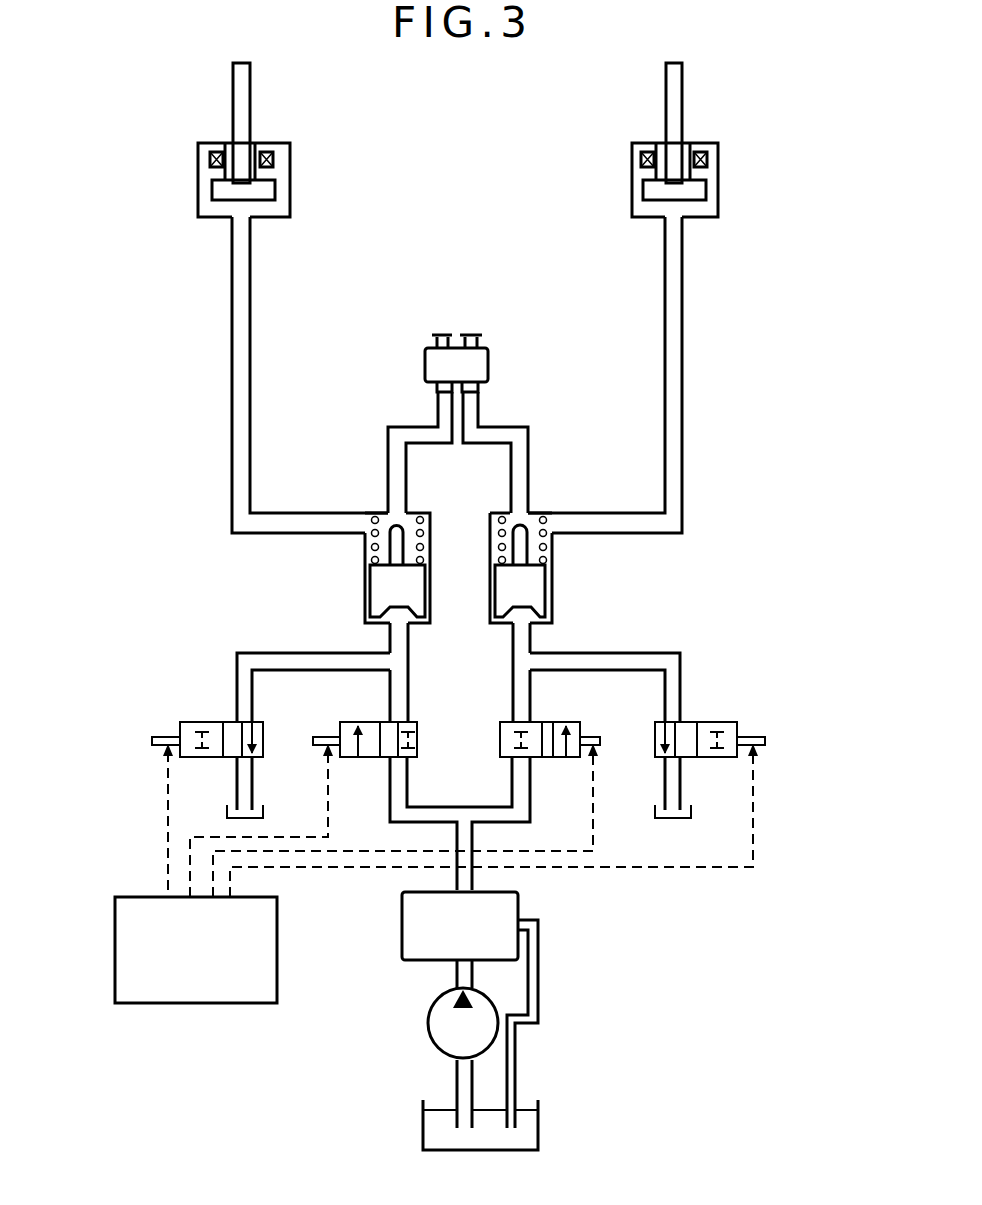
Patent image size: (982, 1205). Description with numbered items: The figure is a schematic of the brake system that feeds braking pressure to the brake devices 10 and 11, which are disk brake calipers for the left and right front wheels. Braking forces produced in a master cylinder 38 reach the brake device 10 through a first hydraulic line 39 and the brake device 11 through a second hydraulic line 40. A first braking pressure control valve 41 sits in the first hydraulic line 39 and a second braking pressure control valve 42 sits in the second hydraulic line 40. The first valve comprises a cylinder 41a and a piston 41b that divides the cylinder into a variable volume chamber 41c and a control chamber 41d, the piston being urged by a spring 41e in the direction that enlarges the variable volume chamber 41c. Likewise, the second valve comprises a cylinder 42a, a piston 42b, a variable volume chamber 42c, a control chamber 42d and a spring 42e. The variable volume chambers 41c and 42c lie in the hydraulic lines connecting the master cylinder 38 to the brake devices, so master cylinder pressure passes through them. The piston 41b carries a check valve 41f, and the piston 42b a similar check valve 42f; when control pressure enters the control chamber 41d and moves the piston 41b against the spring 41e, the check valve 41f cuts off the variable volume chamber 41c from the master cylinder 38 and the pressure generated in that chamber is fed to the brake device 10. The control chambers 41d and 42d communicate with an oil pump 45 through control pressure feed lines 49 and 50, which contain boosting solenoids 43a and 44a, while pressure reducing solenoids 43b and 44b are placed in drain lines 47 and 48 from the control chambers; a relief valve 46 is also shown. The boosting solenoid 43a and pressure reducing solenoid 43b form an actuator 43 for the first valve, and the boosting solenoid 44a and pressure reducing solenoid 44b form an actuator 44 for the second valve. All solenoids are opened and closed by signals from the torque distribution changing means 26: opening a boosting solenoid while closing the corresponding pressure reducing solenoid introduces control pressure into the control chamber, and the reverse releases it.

The brake device 10 is at (283, 220).
The brake device 11 is at (645, 222).
The torque distribution changing means 26 is at (198, 1005).
The master cylinder 38 is at (482, 360).
The first hydraulic line 39 is at (252, 362).
The second hydraulic line 40 is at (663, 370).
The first braking pressure control valve 41 is at (374, 596).
The cylinder 41a is at (365, 603).
The piston 41b is at (377, 578).
The variable volume chamber 41c is at (410, 517).
The control chamber 41d is at (388, 615).
The spring 41e is at (371, 547).
The check valve 41f is at (390, 528).
The second braking pressure control valve 42 is at (537, 598).
The cylinder 42a is at (552, 607).
The piston 42b is at (535, 583).
The variable volume chamber 42c is at (508, 515).
The control chamber 42d is at (524, 618).
The spring 42e is at (550, 547).
The check valve 42f is at (529, 520).
The actuator 43 is at (264, 725).
The boosting solenoid 43a is at (368, 720).
The pressure reducing solenoid 43b is at (218, 720).
The actuator 44 is at (670, 725).
The boosting solenoid 44a is at (570, 720).
The pressure reducing solenoid 44b is at (712, 720).
The oil pump 45 is at (447, 1033).
The relief valve 46 is at (415, 952).
The drain line 47 is at (273, 653).
The drain line 48 is at (675, 653).
The control pressure feed line 49 is at (400, 783).
The control pressure feed line 50 is at (523, 775).